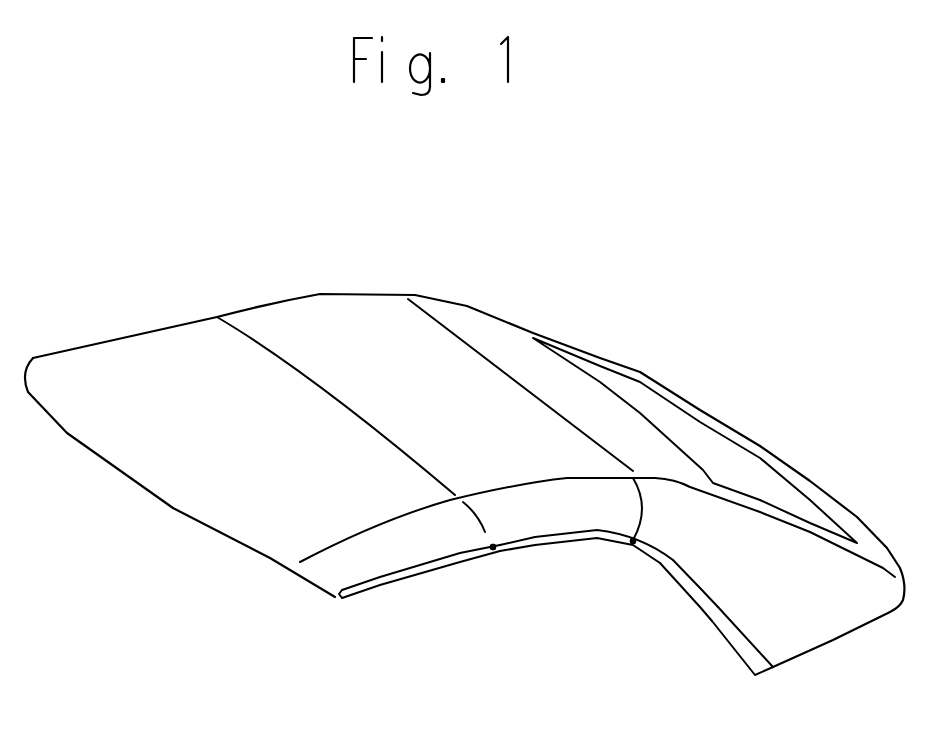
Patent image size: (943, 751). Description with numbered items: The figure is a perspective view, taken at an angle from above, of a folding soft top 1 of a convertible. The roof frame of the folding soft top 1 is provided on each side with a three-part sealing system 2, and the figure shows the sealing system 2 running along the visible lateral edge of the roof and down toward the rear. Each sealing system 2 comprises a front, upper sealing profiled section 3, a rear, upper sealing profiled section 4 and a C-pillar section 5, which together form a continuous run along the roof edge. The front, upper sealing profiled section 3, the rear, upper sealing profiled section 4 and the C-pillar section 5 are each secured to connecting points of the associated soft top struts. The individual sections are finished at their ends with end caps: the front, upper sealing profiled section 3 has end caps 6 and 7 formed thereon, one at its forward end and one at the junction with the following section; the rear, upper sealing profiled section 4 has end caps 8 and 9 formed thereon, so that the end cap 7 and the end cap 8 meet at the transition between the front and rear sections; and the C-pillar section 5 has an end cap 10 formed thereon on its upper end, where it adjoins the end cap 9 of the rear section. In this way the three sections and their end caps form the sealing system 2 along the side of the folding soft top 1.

The folding soft top 1 is at (466, 304).
The sealing system 2 is at (729, 657).
The front, upper sealing profiled section 3 is at (408, 582).
The rear, upper sealing profiled section 4 is at (573, 546).
The C-pillar section 5 is at (691, 607).
The end cap 6 is at (342, 600).
The end cap 7 is at (493, 553).
The end cap 8 is at (497, 553).
The end cap 9 is at (630, 545).
The end cap 10 is at (636, 546).